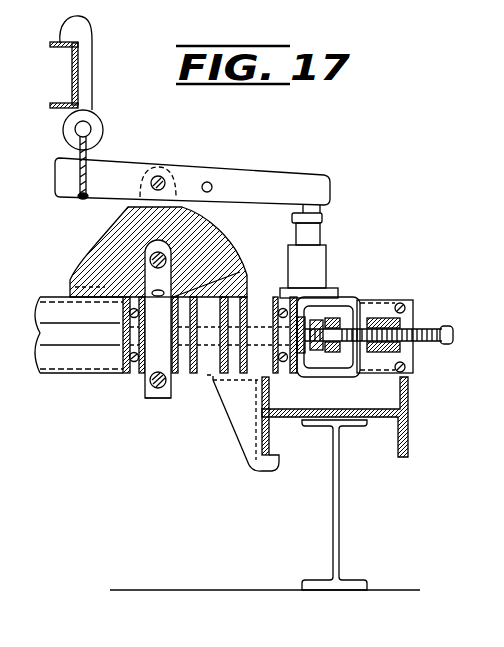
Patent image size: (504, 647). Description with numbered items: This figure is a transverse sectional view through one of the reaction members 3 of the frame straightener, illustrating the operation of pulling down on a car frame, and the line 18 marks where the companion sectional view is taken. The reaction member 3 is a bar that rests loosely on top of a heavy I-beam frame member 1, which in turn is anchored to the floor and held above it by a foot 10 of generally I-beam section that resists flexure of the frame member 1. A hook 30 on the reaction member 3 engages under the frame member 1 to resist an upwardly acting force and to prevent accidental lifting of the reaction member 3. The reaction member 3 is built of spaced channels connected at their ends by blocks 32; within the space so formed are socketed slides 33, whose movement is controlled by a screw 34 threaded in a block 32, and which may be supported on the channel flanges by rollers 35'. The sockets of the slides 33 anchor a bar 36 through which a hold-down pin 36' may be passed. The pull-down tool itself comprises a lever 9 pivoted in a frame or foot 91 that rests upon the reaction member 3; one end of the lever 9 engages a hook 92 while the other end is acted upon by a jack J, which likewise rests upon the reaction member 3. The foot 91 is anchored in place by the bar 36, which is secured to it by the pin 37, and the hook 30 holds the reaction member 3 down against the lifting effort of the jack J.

The hook 92 is at (88, 80).
The lever 9 is at (247, 160).
The frame 91 is at (114, 242).
The pin 37 is at (150, 258).
The reaction member 3 is at (62, 377).
The rollers 35' is at (194, 348).
The bar 36 is at (133, 356).
The hold-down pin 36' is at (177, 416).
The socketed slide 33 is at (248, 304).
The jack J is at (320, 258).
The block 32 is at (384, 303).
The screw 34 is at (445, 329).
The frame member 1 is at (383, 412).
The hook 30 is at (250, 470).
The foot 10 is at (338, 518).
The section line 18— 18 is at (159, 68).